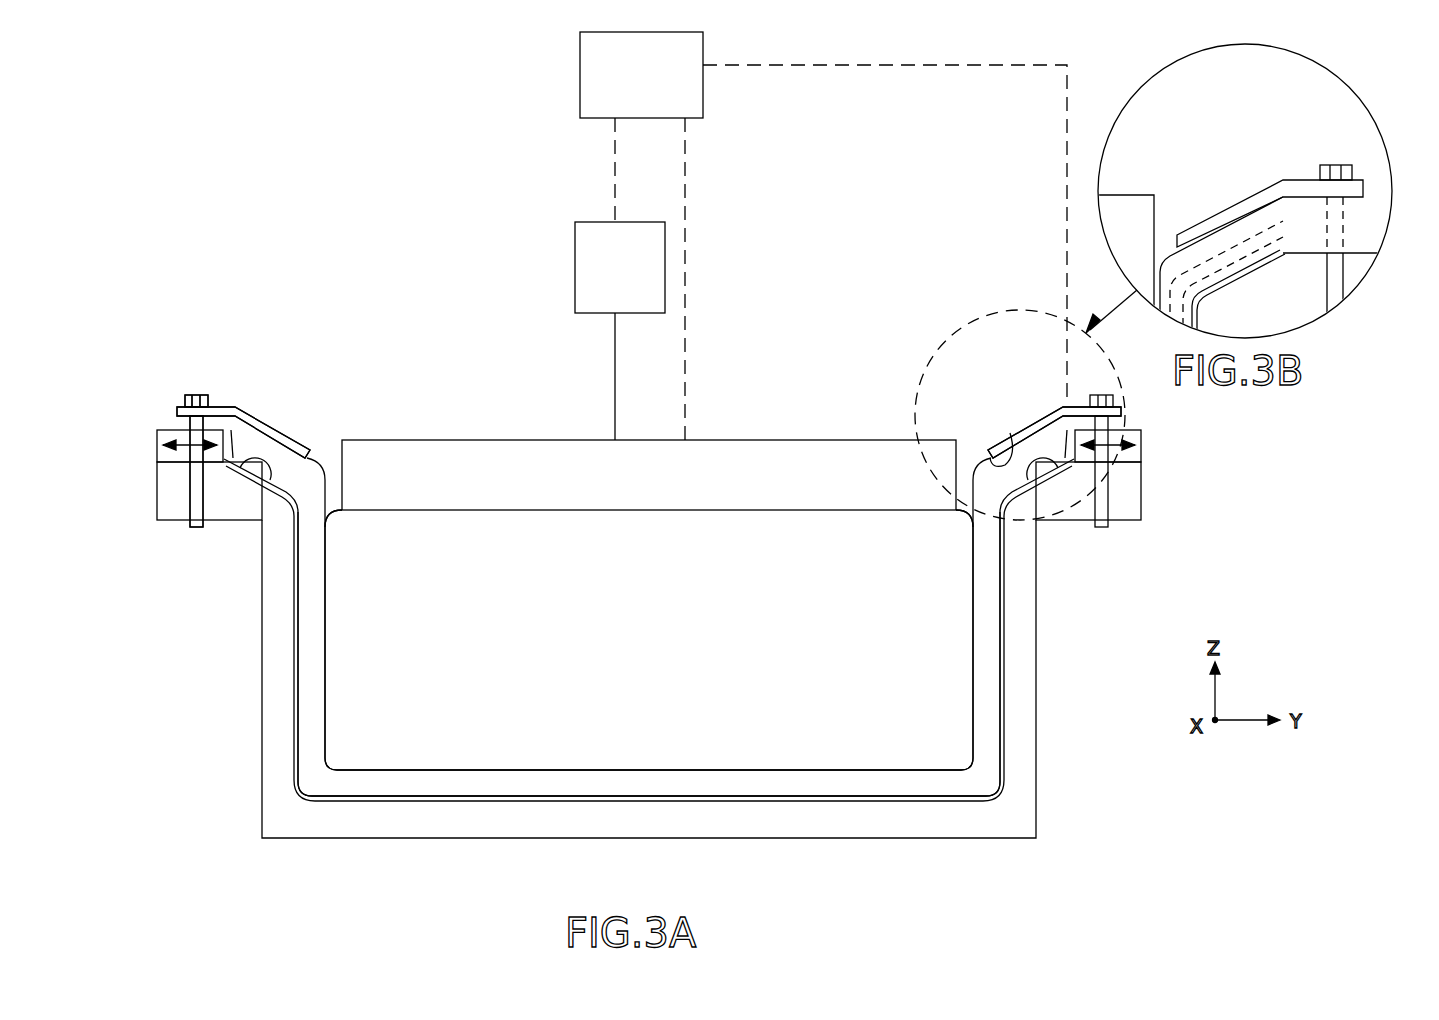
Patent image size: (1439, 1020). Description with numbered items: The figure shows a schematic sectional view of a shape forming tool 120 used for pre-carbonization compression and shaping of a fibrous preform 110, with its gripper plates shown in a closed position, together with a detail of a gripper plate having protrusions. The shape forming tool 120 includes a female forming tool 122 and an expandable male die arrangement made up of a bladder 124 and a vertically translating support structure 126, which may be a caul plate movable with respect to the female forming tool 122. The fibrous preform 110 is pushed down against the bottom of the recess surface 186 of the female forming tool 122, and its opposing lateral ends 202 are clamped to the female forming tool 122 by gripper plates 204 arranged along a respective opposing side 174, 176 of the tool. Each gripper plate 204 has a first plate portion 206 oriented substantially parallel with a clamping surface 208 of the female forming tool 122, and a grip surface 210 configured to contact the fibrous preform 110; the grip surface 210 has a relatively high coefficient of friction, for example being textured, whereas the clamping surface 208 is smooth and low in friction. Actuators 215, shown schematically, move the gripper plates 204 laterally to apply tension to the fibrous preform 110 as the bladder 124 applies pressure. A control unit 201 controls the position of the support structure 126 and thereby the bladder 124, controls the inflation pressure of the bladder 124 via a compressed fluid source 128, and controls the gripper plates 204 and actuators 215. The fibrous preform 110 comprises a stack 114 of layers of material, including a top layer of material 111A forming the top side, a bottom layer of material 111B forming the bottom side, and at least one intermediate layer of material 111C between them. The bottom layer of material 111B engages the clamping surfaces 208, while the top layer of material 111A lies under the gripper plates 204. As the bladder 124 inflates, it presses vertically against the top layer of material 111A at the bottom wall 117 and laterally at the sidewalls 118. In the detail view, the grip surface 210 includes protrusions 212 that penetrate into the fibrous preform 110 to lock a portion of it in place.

In FIG. 3A, the fibrous preform 110 is at (276, 432).
In FIG. 3B, the stack 114 is at (1197, 232).
In FIG. 3A, the bottom wall 117 is at (568, 793).
In FIG. 3A, the sidewalls 118 is at (318, 688).
In FIG. 3A, the shape forming tool 120 is at (160, 268).
In FIG. 3A, the female forming tool 122 is at (262, 640).
In FIG. 3A, the bladder 124 is at (663, 646).
In FIG. 3A, the support structure 126 is at (490, 440).
In FIG. 3A, the compressed fluid source 128 is at (575, 262).
In FIG. 3A, the opposing side 174 is at (158, 492).
In FIG. 3A, the opposing side 176 is at (1141, 493).
In FIG. 3A, the recess surface 186 is at (478, 793).
In FIG. 3A, the control unit 201 is at (580, 100).
In FIG. 3A, the opposing lateral ends 202 is at (250, 444).
In FIG. 3B, the opposing lateral ends 202 is at (1256, 205).
In FIG. 3A, the gripper plates 204 is at (296, 438).
In FIG. 3B, the gripper plates 204 is at (1213, 224).
In FIG. 3A, the first plate portion 206 is at (1010, 435).
In FIG. 3A, the clamping surface 208 is at (240, 478).
In FIG. 3A, the grip surface 210 is at (987, 448).
In FIG. 3A, the protrusions 212 is at (649, 461).
In FIG. 3B, the protrusions 212 is at (1238, 233).
In FIG. 3A, the actuators 215 is at (158, 440).
In FIG. 3B, the top layer of material 111A is at (1277, 203).
In FIG. 3B, the bottom layer of material 111B is at (1268, 237).
In FIG. 3B, the intermediate layer of material 111C is at (1268, 258).